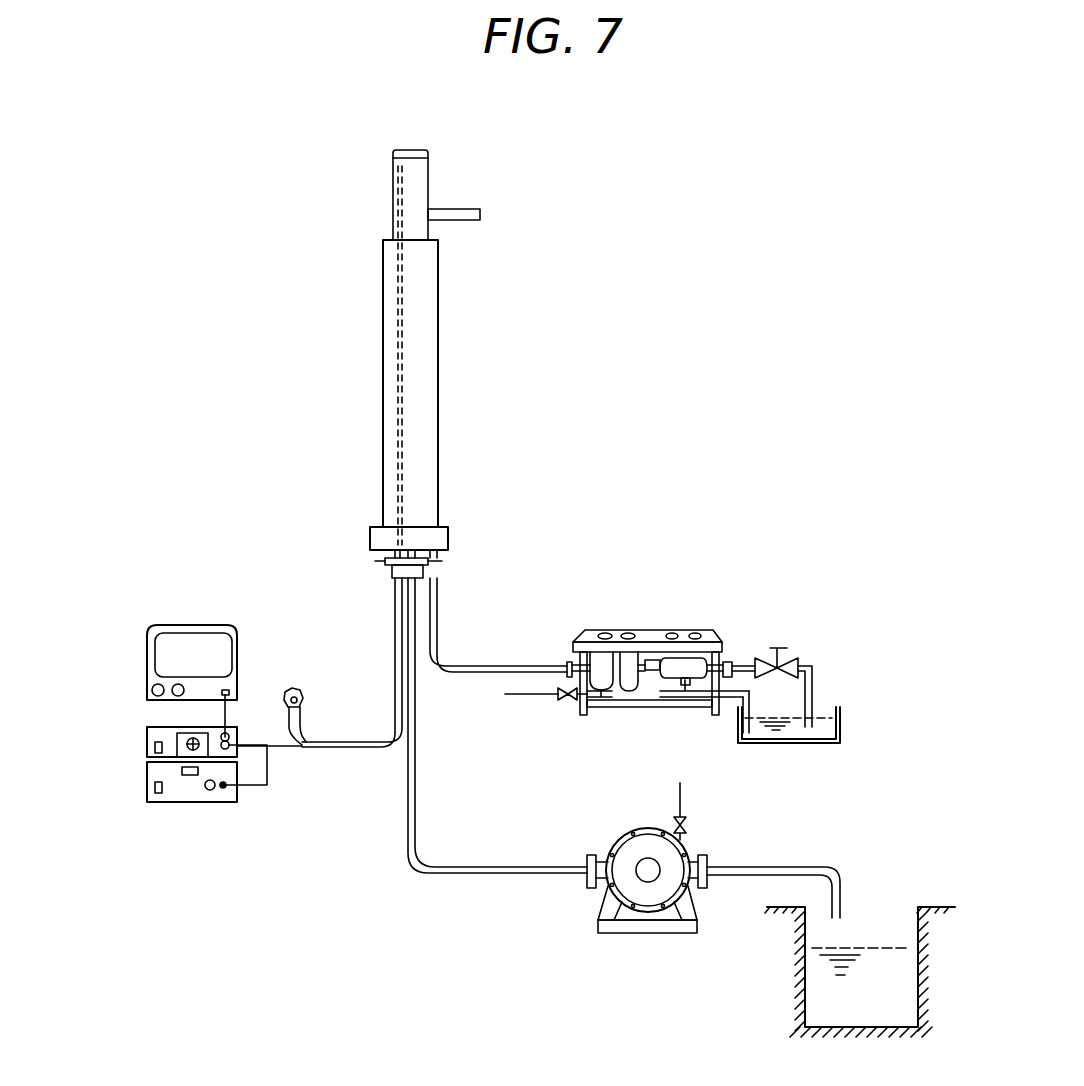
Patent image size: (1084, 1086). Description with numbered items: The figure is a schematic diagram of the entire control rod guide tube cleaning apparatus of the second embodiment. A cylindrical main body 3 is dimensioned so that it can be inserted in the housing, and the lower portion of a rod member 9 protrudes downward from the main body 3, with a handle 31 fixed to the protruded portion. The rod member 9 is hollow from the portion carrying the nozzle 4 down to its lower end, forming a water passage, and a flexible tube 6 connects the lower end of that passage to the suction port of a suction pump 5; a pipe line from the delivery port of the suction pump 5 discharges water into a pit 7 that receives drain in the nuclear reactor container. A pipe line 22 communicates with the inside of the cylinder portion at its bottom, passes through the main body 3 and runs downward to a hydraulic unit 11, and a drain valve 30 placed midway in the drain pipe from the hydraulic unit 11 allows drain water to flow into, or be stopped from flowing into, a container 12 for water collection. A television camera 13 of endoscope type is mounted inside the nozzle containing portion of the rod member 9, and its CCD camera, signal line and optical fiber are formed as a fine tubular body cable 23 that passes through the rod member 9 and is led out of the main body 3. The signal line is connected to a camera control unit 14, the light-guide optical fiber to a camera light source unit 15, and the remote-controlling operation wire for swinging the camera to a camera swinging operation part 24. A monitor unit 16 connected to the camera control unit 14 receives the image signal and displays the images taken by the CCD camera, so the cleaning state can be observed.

The main body 3 is at (432, 347).
The nozzle 4 is at (480, 214).
The suction pump 5 is at (616, 842).
The flexible tube 6 is at (460, 867).
The pit 7 is at (820, 1005).
The rod member 9 is at (428, 200).
The hydraulic unit 11 is at (655, 632).
The container for water collection 12 is at (840, 722).
The television camera 13 is at (405, 177).
The camera control unit 14 is at (147, 739).
The camera light source unit 15 is at (147, 781).
The monitor unit 16 is at (147, 640).
The pipe line 22 is at (432, 618).
The body cable 23 is at (395, 612).
The camera swinging operation part 24 is at (298, 688).
The drain valve 30 is at (777, 648).
The handle 31 is at (423, 552).